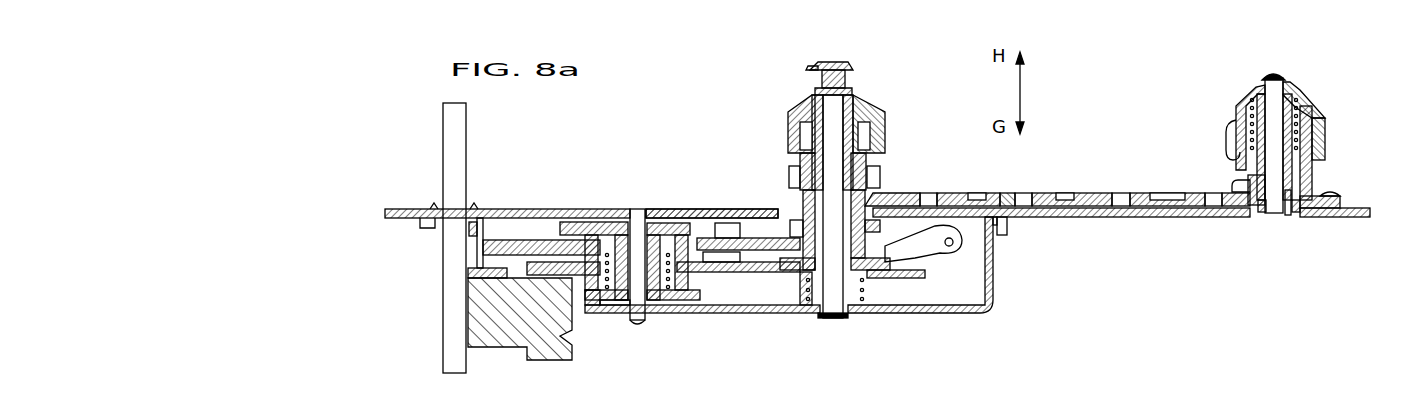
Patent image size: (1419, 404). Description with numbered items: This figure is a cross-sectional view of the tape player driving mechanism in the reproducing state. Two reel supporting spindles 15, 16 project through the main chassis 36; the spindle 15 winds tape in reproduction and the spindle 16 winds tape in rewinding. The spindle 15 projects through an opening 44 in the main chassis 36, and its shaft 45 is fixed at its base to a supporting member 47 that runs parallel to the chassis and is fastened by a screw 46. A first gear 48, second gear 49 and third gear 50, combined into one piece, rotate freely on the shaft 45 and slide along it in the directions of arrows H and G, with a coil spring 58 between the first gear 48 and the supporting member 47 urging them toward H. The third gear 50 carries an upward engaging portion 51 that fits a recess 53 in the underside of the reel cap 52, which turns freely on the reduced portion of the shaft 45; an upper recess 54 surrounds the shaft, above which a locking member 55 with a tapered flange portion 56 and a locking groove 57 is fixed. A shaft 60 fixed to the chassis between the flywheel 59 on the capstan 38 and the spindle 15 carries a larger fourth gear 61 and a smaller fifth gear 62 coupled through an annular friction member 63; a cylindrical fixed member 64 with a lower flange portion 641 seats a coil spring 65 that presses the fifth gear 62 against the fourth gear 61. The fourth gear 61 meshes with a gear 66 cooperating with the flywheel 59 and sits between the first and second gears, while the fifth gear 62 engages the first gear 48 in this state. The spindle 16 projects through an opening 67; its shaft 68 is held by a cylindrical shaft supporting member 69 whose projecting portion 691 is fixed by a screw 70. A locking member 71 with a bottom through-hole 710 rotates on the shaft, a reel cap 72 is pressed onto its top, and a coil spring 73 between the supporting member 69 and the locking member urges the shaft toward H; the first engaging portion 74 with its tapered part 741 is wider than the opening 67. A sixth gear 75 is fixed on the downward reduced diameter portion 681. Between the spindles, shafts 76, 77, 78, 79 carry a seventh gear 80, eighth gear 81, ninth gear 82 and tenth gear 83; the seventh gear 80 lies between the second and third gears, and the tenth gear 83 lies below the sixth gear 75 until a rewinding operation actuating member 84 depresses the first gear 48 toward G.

The reel supporting spindle 15 is at (888, 108).
The reel supporting spindle 16 is at (1330, 100).
The main chassis 36 is at (555, 208).
The capstan 38 is at (468, 129).
The opening 44 is at (783, 208).
The shaft 45 is at (836, 320).
The screw 46 is at (1003, 235).
The supporting member 47 is at (955, 315).
The first gear 48 is at (878, 275).
The second gear 49 is at (886, 205).
The third gear 50 is at (878, 168).
The engaging portion 51 is at (793, 166).
The reel cap 52 is at (797, 100).
The recess 53 is at (880, 133).
The recess 54 is at (857, 104).
The locking member 55 is at (825, 62).
The flange portion 56 is at (818, 66).
The locking groove 57 is at (848, 80).
The coil spring 58 is at (793, 315).
The flywheel 59 is at (497, 352).
The shaft 60 is at (637, 326).
The fourth gear 61 is at (682, 208).
The fifth gear 62 is at (742, 305).
The friction member 63 is at (714, 274).
The fixed member 64 is at (660, 315).
The flange portion 641 is at (605, 315).
The coil spring 65 is at (688, 315).
The gear 66 is at (502, 208).
The opening 67 is at (1298, 216).
The shaft 68 is at (1275, 82).
The reduced diameter portion 681 is at (1270, 216).
The shaft supporting member 69 is at (1305, 162).
The projecting portion 691 is at (1340, 218).
The screw 70 is at (1335, 198).
The locking member 71 is at (1232, 123).
The through-hole 710 is at (1258, 97).
The reel cap 72 is at (1302, 84).
The coil spring 73 is at (1322, 133).
The first engaging portion 74 is at (1235, 185).
The tapered part 741 is at (1232, 193).
The sixth gear 75 is at (1290, 218).
The shaft 76 is at (935, 205).
The shaft 77 is at (1030, 205).
The shaft 78 is at (1120, 205).
The shaft 79 is at (1213, 216).
The seventh gear 80 is at (970, 205).
The eighth gear 81 is at (1008, 205).
The ninth gear 82 is at (1092, 205).
The tenth gear 83 is at (1187, 216).
The rewinding operation actuating member 84 is at (930, 250).